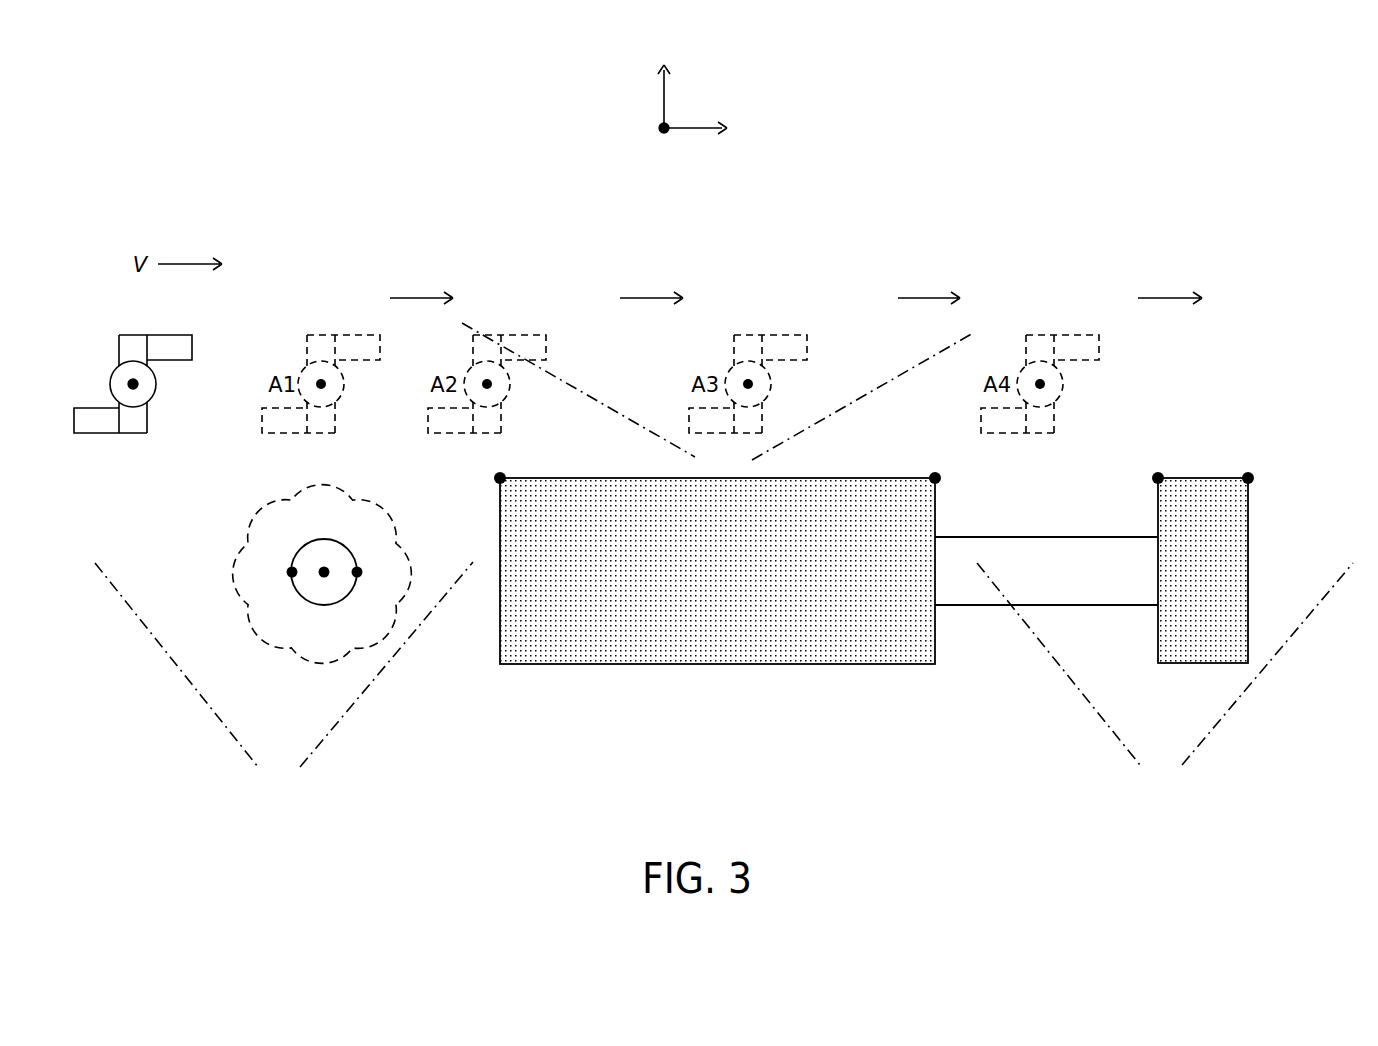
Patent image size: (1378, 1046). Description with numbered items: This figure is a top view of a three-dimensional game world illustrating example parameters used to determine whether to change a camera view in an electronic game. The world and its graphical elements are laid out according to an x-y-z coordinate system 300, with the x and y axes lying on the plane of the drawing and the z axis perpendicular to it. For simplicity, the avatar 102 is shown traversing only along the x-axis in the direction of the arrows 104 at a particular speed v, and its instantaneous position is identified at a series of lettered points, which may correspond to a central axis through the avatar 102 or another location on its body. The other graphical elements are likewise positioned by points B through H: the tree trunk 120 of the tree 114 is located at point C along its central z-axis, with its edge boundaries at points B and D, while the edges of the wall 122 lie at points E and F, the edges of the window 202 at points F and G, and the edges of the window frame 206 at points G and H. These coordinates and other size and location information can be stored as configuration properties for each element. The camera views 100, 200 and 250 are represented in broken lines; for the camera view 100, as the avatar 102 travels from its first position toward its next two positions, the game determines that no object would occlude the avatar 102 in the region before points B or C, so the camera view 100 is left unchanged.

The coordinate system 300 is at (620, 102).
The avatar 102 is at (132, 355).
The arrows 104 is at (407, 296).
The tree 114 is at (237, 573).
The tree trunk 120 is at (313, 605).
The camera view 100 is at (284, 679).
The camera view 200 is at (718, 403).
The wall 122 is at (778, 640).
The window 202 is at (1045, 587).
The window frame 206 is at (1228, 610).
The camera view 250 is at (1165, 680).